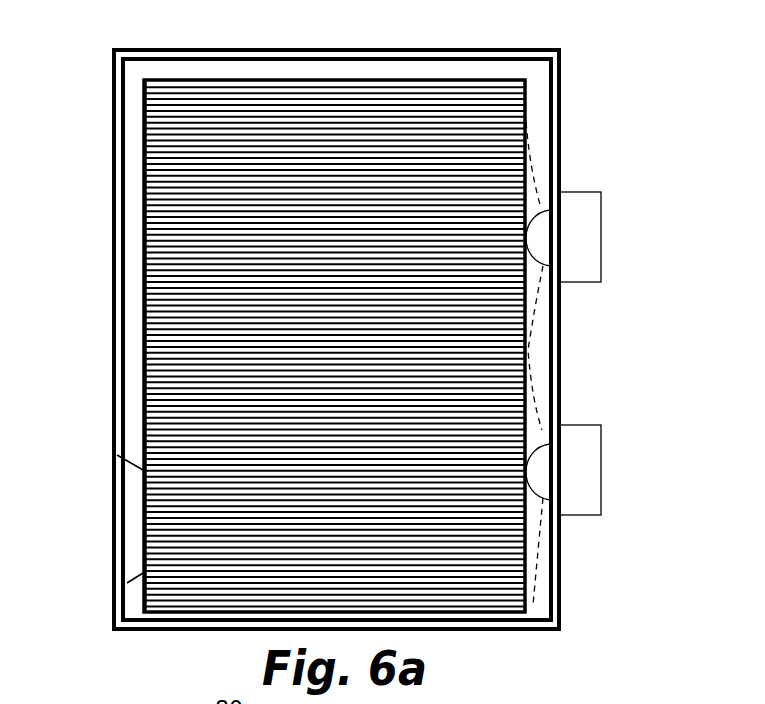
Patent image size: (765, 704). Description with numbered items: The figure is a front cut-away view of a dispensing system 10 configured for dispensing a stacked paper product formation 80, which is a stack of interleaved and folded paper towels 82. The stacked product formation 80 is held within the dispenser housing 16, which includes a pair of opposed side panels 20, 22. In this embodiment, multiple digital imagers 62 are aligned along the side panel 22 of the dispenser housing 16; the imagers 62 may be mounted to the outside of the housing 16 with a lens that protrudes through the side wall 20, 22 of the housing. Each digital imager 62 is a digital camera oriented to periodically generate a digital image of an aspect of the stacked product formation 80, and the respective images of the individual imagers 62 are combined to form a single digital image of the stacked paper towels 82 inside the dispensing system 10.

The dispensing system 10 is at (374, 317).
The dispenser housing 16 is at (563, 355).
The side panel 20 is at (113, 167).
The side panel 22 is at (561, 560).
The digital imager 62 is at (585, 238).
The stacked product formation 80 is at (413, 80).
The paper towels 82 is at (146, 340).